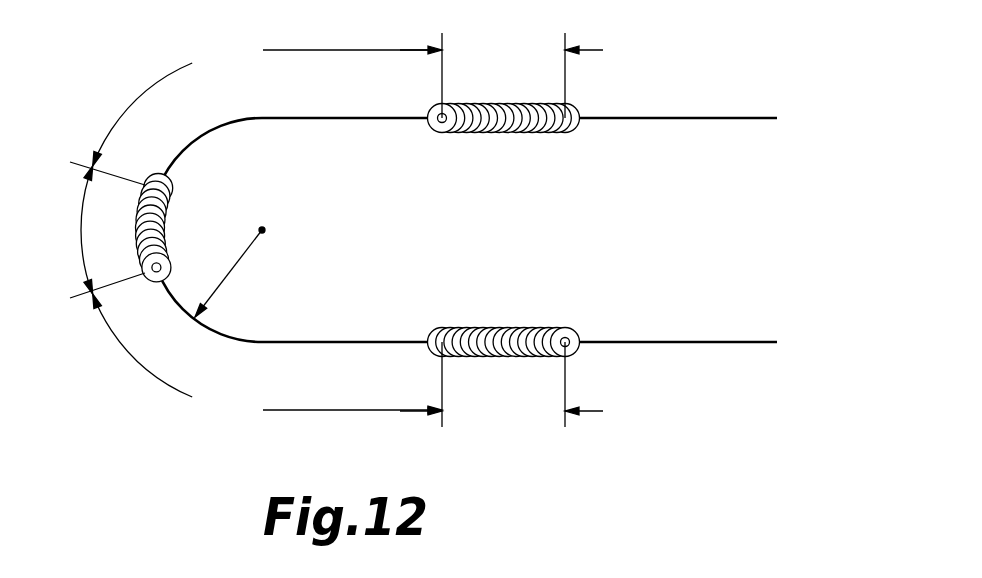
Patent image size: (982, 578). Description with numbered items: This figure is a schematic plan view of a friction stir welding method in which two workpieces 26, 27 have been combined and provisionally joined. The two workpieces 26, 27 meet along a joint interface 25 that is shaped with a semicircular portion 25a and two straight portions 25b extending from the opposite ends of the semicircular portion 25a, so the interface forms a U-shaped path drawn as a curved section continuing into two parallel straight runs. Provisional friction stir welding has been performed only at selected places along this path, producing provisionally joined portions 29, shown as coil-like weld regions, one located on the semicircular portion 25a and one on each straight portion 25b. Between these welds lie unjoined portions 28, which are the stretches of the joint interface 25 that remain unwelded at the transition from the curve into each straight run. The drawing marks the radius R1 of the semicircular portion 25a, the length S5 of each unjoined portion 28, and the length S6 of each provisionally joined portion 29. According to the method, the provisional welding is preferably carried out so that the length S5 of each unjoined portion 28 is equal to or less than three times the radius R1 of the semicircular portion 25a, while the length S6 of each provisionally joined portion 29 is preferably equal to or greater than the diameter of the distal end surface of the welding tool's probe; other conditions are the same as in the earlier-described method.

The joint interface 25 is at (463, 175).
The semicircular portion 25a is at (198, 140).
The straight portion 25b is at (677, 118).
The workpiece 26 is at (607, 252).
The workpiece 27 is at (694, 72).
The unjoined portion 28 is at (307, 118).
The provisionally joined portion 29 is at (508, 132).
The radius of the semicircular portion R1 is at (242, 272).
The length of each unjoined portion S5 is at (317, 234).
The length of each provisionally joined portion S6 is at (329, 232).